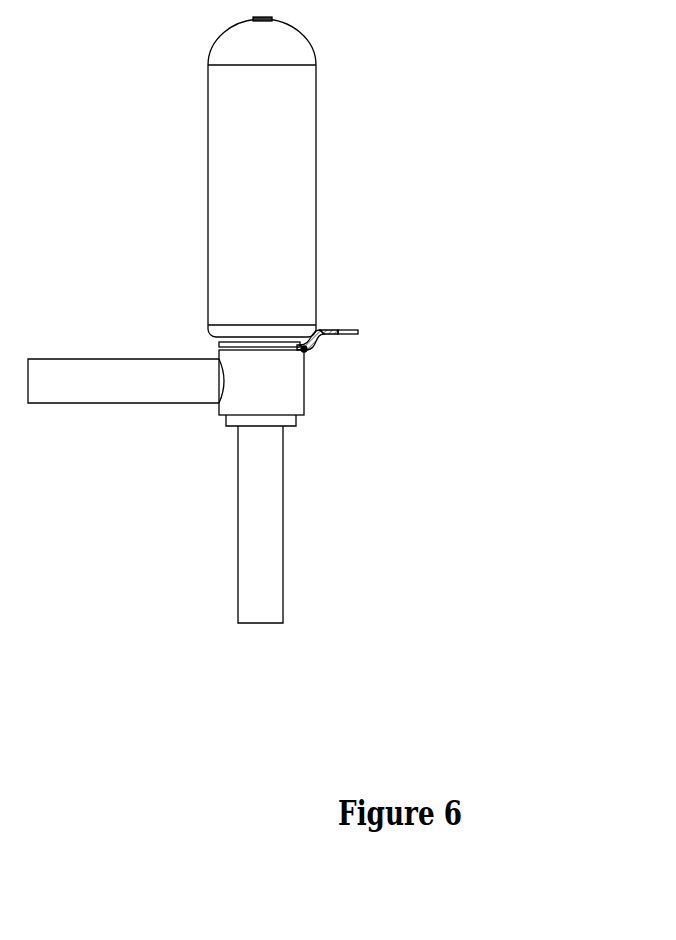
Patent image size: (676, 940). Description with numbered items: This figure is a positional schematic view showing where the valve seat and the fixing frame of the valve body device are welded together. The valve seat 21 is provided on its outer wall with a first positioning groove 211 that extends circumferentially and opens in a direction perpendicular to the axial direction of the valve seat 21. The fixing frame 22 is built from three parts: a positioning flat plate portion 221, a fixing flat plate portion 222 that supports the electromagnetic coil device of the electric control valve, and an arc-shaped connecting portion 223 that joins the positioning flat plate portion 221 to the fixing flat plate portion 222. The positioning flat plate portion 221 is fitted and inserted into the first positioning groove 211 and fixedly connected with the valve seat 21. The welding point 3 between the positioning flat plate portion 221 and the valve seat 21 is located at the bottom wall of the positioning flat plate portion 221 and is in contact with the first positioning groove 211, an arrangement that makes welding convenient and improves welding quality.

The valve seat 21 is at (265, 390).
The first positioning groove 211 is at (252, 348).
The fixing frame 22 is at (447, 399).
The positioning flat plate portion 221 is at (305, 349).
The fixing flat plate portion 222 is at (335, 332).
The arc-shaped connecting portion 223 is at (318, 340).
The welding point 3 is at (306, 351).